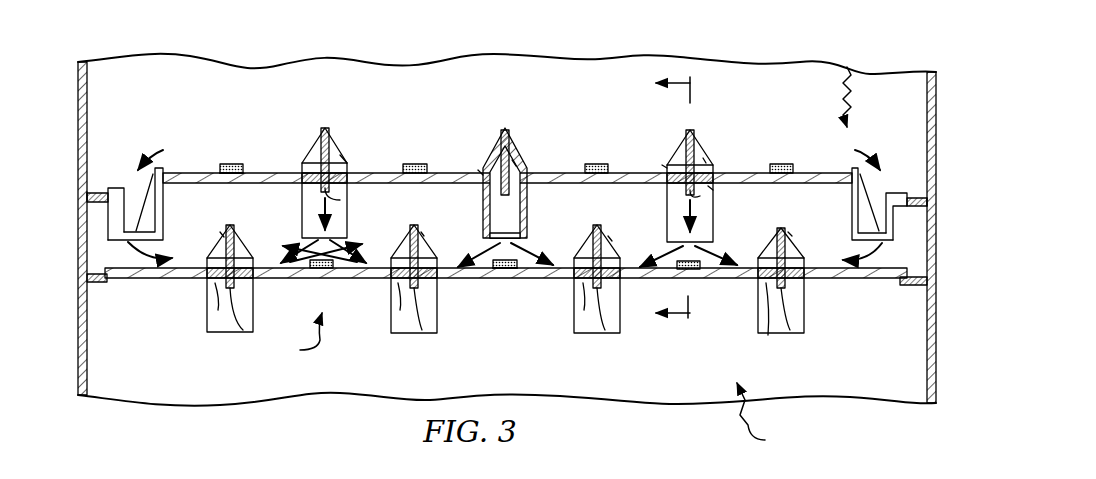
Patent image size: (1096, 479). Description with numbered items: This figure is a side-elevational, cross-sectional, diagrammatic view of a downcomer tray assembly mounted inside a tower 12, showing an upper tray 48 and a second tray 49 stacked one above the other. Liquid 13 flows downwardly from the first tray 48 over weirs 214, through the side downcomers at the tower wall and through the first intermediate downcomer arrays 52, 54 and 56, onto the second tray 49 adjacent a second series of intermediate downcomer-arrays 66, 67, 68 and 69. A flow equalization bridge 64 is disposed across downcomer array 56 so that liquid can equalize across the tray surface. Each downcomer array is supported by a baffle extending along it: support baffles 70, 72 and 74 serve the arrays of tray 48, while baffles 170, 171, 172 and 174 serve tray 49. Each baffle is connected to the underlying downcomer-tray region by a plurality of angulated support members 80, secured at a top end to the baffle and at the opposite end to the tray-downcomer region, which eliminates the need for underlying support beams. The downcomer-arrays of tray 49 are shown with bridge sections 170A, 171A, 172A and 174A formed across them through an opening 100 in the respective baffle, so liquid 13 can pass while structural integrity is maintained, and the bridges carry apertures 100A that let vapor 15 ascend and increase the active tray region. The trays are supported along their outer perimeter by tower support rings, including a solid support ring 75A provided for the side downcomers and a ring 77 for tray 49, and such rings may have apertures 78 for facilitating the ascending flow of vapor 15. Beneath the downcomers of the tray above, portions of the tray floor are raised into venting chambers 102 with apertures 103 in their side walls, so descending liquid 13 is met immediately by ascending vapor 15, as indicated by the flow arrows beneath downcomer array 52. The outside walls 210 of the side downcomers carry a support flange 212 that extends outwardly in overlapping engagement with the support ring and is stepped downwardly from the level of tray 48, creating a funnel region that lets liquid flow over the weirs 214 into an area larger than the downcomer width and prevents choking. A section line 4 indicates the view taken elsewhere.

The tower 12 is at (927, 72).
The liquid 13 is at (840, 108).
The vapor 15 is at (536, 344).
The section line 4 is at (659, 198).
The upper tray 48 is at (432, 160).
The second tray 49 is at (451, 285).
The downcomer array 52 is at (352, 163).
The downcomer array 54 is at (481, 164).
The downcomer array 56 is at (664, 166).
The bridge 64 is at (710, 188).
The intermediate downcomer-array 66 is at (221, 231).
The intermediate downcomer-array 67 is at (423, 232).
The intermediate downcomer-array 68 is at (616, 242).
The intermediate downcomer-array 69 is at (790, 233).
The support baffle 70 is at (322, 130).
The support baffle 72 is at (505, 128).
The support baffle 74 is at (688, 130).
The solid support ring 75A is at (93, 193).
The tower support ring 77 is at (910, 286).
The apertures 78 is at (98, 283).
The support members 80 is at (514, 165).
The opening 100 is at (317, 158).
The apertures 100A is at (347, 188).
The venting chambers 102 is at (220, 166).
The apertures 103 is at (237, 165).
The baffle 170 is at (205, 258).
The bridge section 170A is at (215, 287).
The baffle 171 is at (387, 258).
The bridge section 171A is at (392, 284).
The baffle 172 is at (566, 257).
The bridge section 172A is at (578, 287).
The baffle 174 is at (757, 258).
The bridge section 174A is at (767, 335).
The outside wall 210 is at (508, 253).
The support flange 212 is at (117, 188).
The weir 214 is at (163, 166).